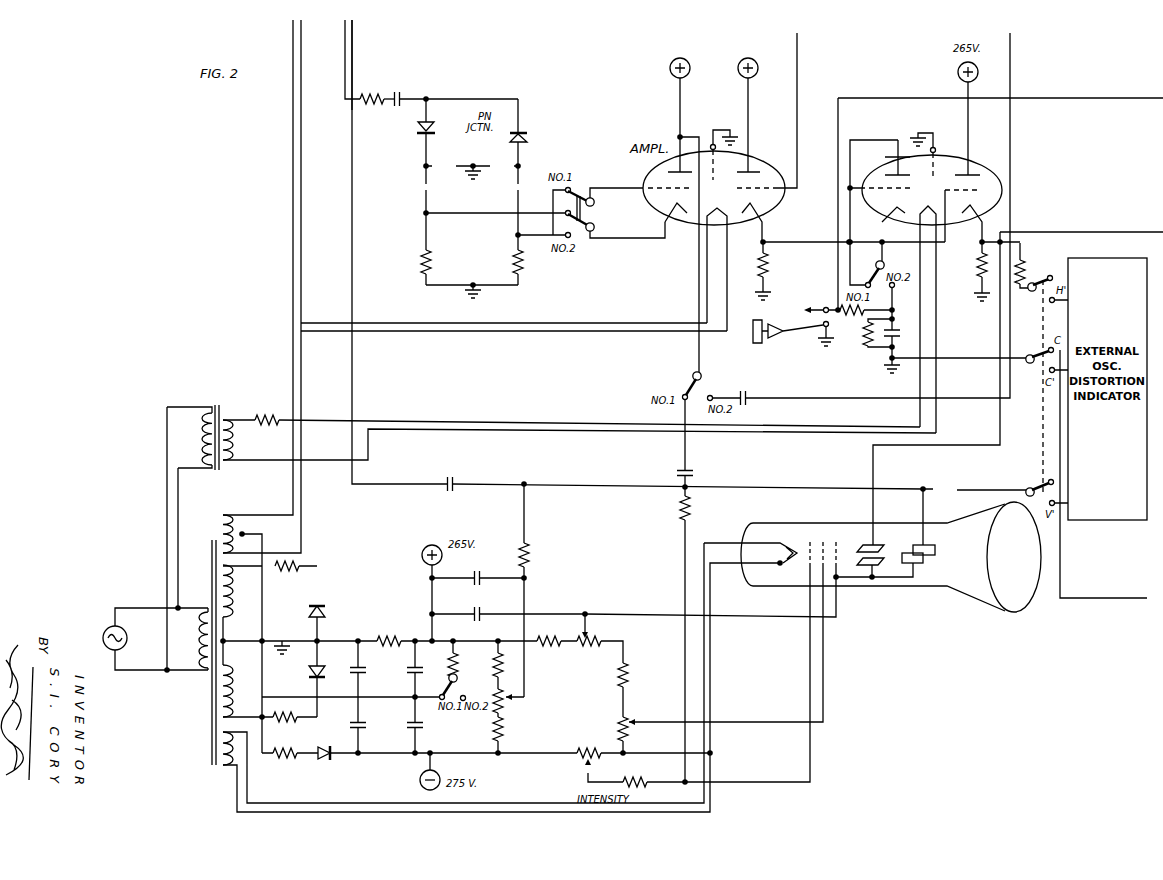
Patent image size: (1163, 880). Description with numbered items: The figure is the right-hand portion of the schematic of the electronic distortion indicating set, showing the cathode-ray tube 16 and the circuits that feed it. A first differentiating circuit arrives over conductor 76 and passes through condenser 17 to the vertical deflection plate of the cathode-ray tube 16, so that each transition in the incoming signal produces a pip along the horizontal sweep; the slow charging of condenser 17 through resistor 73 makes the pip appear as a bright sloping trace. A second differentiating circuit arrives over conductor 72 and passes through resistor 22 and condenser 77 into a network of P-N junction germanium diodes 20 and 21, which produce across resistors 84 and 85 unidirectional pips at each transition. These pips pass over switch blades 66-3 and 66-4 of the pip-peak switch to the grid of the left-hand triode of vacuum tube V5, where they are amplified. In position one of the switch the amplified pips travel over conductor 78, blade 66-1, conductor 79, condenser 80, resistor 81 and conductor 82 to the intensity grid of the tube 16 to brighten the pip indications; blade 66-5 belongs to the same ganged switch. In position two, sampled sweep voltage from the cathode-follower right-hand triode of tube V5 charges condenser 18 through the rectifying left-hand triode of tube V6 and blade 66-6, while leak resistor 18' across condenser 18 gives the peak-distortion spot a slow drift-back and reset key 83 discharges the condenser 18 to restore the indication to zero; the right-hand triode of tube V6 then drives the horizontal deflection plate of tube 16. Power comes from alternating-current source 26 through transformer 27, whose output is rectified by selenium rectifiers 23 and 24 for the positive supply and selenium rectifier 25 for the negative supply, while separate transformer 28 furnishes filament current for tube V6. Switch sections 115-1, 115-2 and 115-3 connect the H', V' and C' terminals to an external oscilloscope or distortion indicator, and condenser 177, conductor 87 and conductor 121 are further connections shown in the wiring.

The conductor 76 is at (345, 59).
The conductor 72 is at (352, 60).
The condenser 77 is at (399, 92).
The resistor 22 is at (370, 103).
The germanium diode 20 is at (437, 128).
The germanium diode 21 is at (528, 136).
The switch blade 66-3 is at (583, 189).
The switch blade 66-4 is at (587, 233).
The resistor 84 is at (418, 267).
The resistor 85 is at (526, 266).
The vacuum tube V5 is at (716, 218).
The vacuum tube V6 is at (929, 218).
The conductor 78 is at (699, 356).
The switch blade 66-1 is at (691, 382).
The conductor 79 is at (684, 417).
The capacitor 177 is at (746, 394).
The condenser 17 is at (452, 480).
The condenser 80 is at (697, 475).
The resistor 81 is at (692, 509).
The conductor 82 is at (690, 532).
The resistor 73 is at (531, 551).
The switch blade 66-5 is at (442, 700).
The selenium rectifier 23 is at (308, 612).
The selenium rectifier 24 is at (308, 673).
The selenium rectifier 25 is at (325, 757).
The source of alternating current 26 is at (113, 624).
The transformer 27 is at (210, 673).
The transformer 28 is at (216, 407).
The switch blade 66-6 is at (862, 279).
The reset key 83 is at (775, 337).
The condenser 18 is at (877, 314).
The resistor 18' is at (839, 334).
The conductor 87 is at (1080, 232).
The switch 115-1 is at (1046, 276).
The switch 115-2 is at (1040, 352).
The switch 115-3 is at (1040, 486).
The conductor 121 is at (1127, 98).
The cathode-ray tube 16 is at (1020, 604).